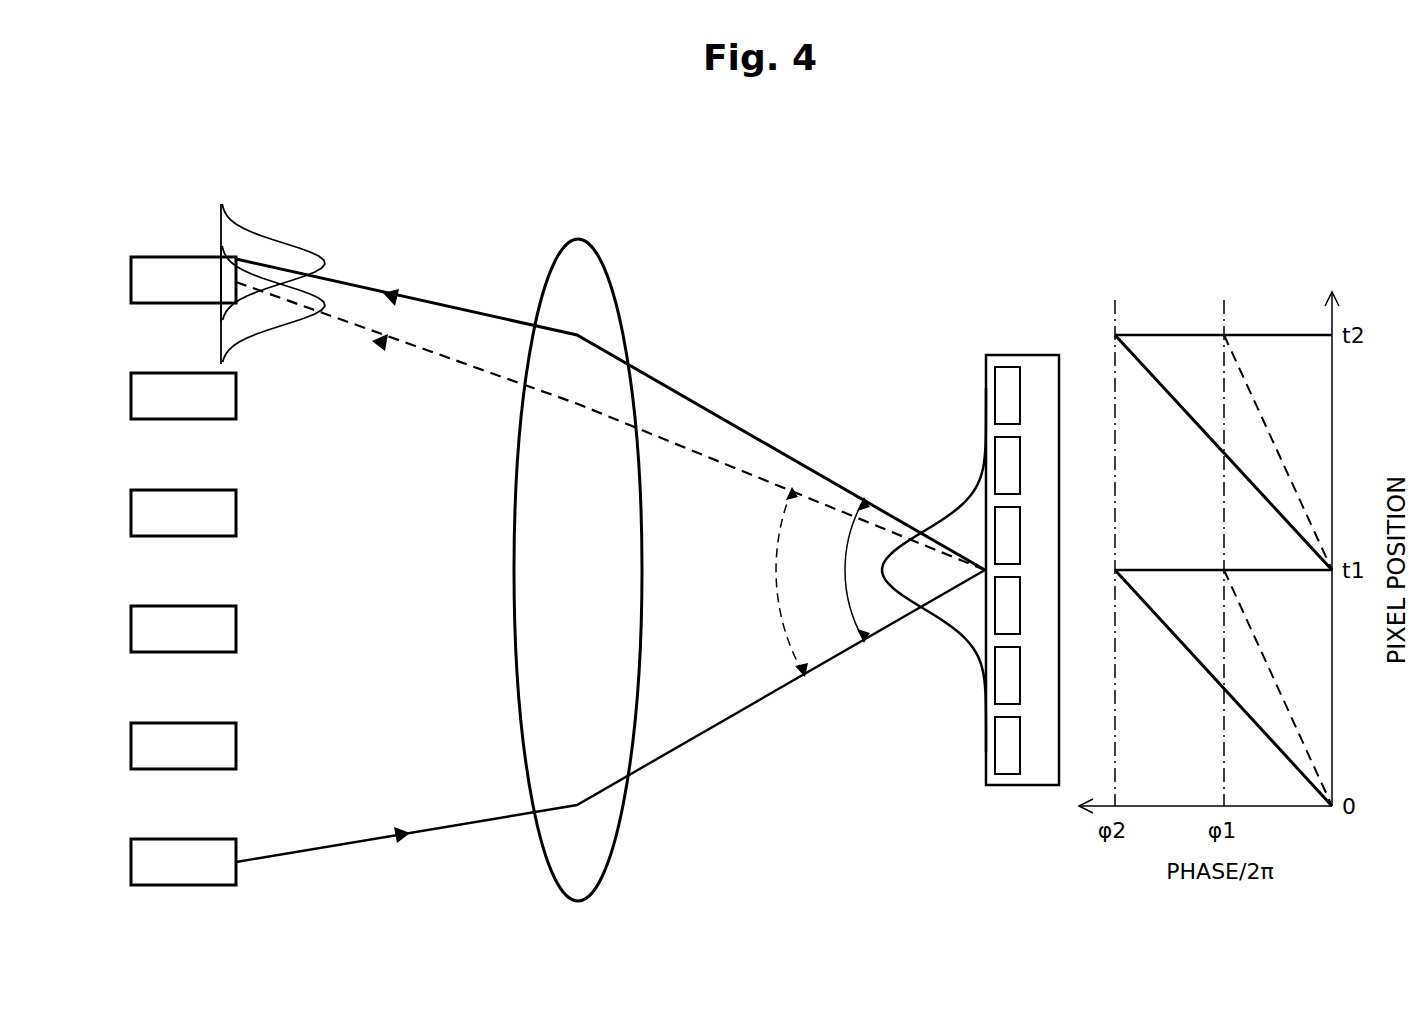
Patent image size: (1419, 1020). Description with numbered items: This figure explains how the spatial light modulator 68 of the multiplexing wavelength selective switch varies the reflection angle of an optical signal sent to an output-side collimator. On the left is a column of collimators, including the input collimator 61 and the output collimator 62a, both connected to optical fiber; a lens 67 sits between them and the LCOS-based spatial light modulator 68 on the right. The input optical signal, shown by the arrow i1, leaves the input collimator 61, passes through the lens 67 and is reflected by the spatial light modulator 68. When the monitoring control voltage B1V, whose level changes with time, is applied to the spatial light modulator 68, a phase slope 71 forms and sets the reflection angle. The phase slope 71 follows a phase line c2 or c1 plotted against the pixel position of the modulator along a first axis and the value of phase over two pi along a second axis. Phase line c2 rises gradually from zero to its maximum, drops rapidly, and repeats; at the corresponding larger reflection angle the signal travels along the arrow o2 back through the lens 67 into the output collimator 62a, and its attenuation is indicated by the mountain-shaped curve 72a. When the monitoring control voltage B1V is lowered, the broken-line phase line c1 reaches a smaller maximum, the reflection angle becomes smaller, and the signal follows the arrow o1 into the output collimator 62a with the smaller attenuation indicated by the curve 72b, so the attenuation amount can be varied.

The input fiber collimator 61 is at (179, 839).
The output collimator 62a is at (180, 257).
The lens 67 is at (606, 265).
The spatial light modulator 68 is at (1005, 355).
The phase slope 71 is at (938, 631).
The mountain-shaped curve 72a is at (277, 239).
The curve 72b is at (269, 324).
The arrow o1 is at (434, 365).
The arrow o2 is at (452, 305).
The arrow i1 is at (470, 824).
The phase line c1 is at (1279, 452).
The phase line c2 is at (1170, 400).
The monitoring control voltage B1V is at (1037, 353).